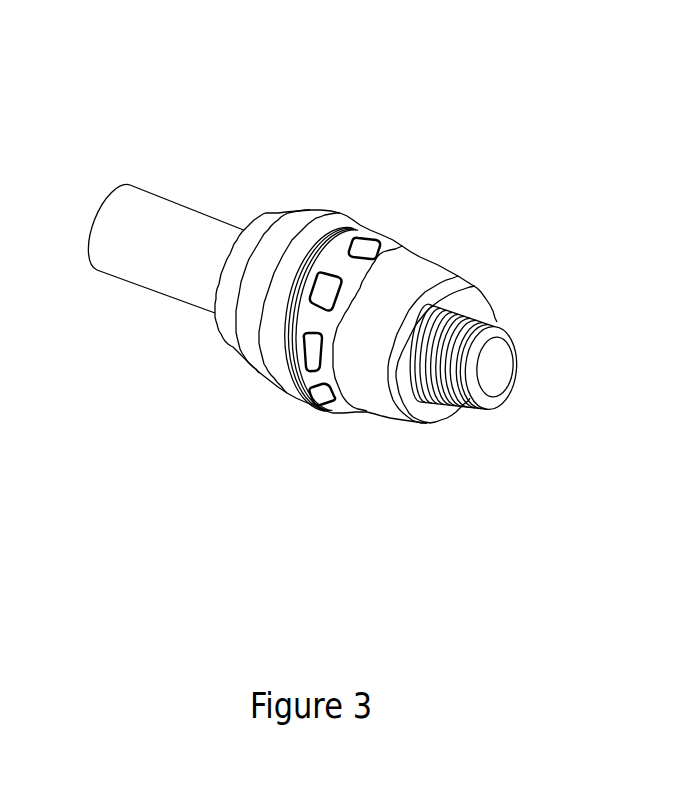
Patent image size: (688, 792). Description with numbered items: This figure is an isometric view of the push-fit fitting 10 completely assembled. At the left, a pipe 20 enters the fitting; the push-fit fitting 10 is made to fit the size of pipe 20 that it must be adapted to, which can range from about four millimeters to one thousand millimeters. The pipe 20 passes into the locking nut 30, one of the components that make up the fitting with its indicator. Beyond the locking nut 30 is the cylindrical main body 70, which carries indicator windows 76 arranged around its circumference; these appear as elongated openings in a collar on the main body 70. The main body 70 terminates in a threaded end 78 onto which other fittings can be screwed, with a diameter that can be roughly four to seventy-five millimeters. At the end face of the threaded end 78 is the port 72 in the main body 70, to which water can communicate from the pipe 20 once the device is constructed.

The push-fit fitting 10 is at (357, 82).
The pipe 20 is at (191, 173).
The locking nut 30 is at (311, 185).
The indicator windows 76 is at (362, 234).
The main body 70 is at (446, 243).
The threaded end 78 is at (487, 323).
The port 72 is at (489, 370).